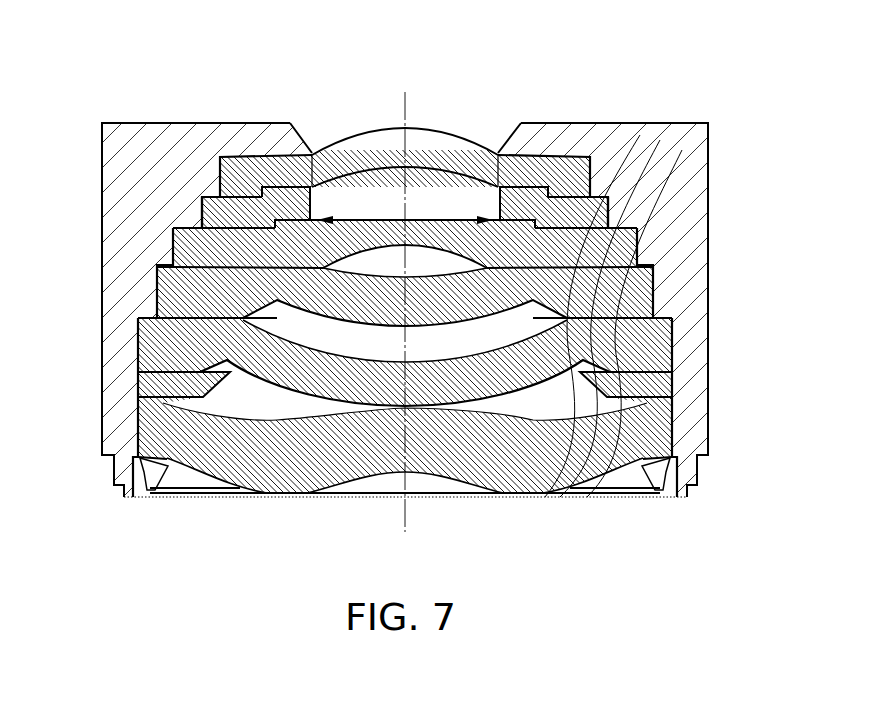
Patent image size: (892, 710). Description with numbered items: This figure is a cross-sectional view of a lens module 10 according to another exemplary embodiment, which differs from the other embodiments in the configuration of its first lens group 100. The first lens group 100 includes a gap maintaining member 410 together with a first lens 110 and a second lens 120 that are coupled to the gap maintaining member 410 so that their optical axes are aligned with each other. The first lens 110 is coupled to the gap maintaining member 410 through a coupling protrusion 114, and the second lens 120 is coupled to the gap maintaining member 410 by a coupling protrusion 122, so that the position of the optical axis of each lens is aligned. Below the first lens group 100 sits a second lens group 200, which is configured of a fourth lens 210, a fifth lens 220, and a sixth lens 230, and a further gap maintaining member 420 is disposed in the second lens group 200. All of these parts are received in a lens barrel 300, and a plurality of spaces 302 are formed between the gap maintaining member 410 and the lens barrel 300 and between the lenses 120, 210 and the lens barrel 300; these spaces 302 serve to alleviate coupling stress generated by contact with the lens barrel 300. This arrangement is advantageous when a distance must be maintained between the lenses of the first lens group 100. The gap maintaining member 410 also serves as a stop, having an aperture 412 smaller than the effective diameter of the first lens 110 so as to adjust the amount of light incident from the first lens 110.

The lens module 10 is at (608, 57).
The first lens group 100 is at (780, 235).
The first lens 110 is at (597, 172).
The coupling protrusion 114 is at (247, 196).
The second lens 120 is at (640, 243).
The coupling protrusion 122 is at (172, 265).
The second lens group 200 is at (780, 410).
The fourth lens 210 is at (657, 289).
The fifth lens 220 is at (680, 353).
The sixth lens 230 is at (680, 413).
The lens barrel 300 is at (218, 214).
The spaces 302 is at (545, 497).
The gap maintaining member 410 is at (218, 185).
The aperture 412 is at (393, 198).
The gap maintaining member 420 is at (190, 392).